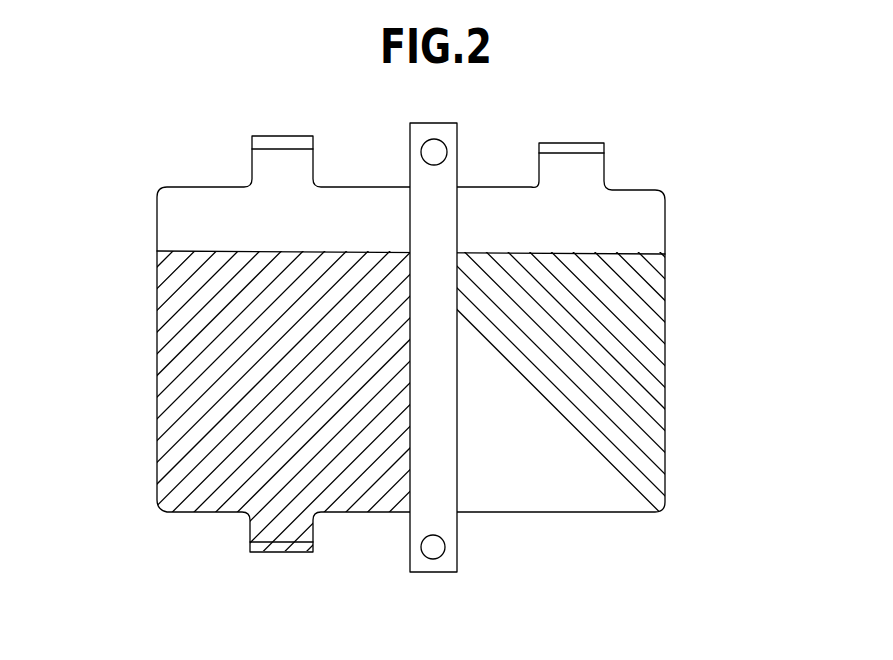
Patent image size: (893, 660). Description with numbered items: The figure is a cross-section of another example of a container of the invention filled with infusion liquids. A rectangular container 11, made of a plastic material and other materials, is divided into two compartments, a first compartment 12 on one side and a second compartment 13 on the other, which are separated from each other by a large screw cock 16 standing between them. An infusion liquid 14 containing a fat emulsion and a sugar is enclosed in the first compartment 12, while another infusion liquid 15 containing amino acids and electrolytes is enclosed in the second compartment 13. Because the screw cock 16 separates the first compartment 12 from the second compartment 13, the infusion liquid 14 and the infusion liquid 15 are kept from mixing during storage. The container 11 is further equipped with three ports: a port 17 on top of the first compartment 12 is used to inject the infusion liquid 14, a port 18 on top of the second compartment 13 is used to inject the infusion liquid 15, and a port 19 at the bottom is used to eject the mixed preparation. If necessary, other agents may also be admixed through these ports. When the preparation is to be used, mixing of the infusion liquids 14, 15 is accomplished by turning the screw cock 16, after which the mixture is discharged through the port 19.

The rectangular container 11 is at (648, 167).
The first compartment 12 is at (172, 211).
The second compartment 13 is at (625, 233).
The infusion liquid 14 is at (195, 378).
The infusion liquid 15 is at (612, 405).
The screw cock 16 is at (430, 503).
The port 17 is at (285, 137).
The port 18 is at (568, 142).
The port 19 is at (283, 553).